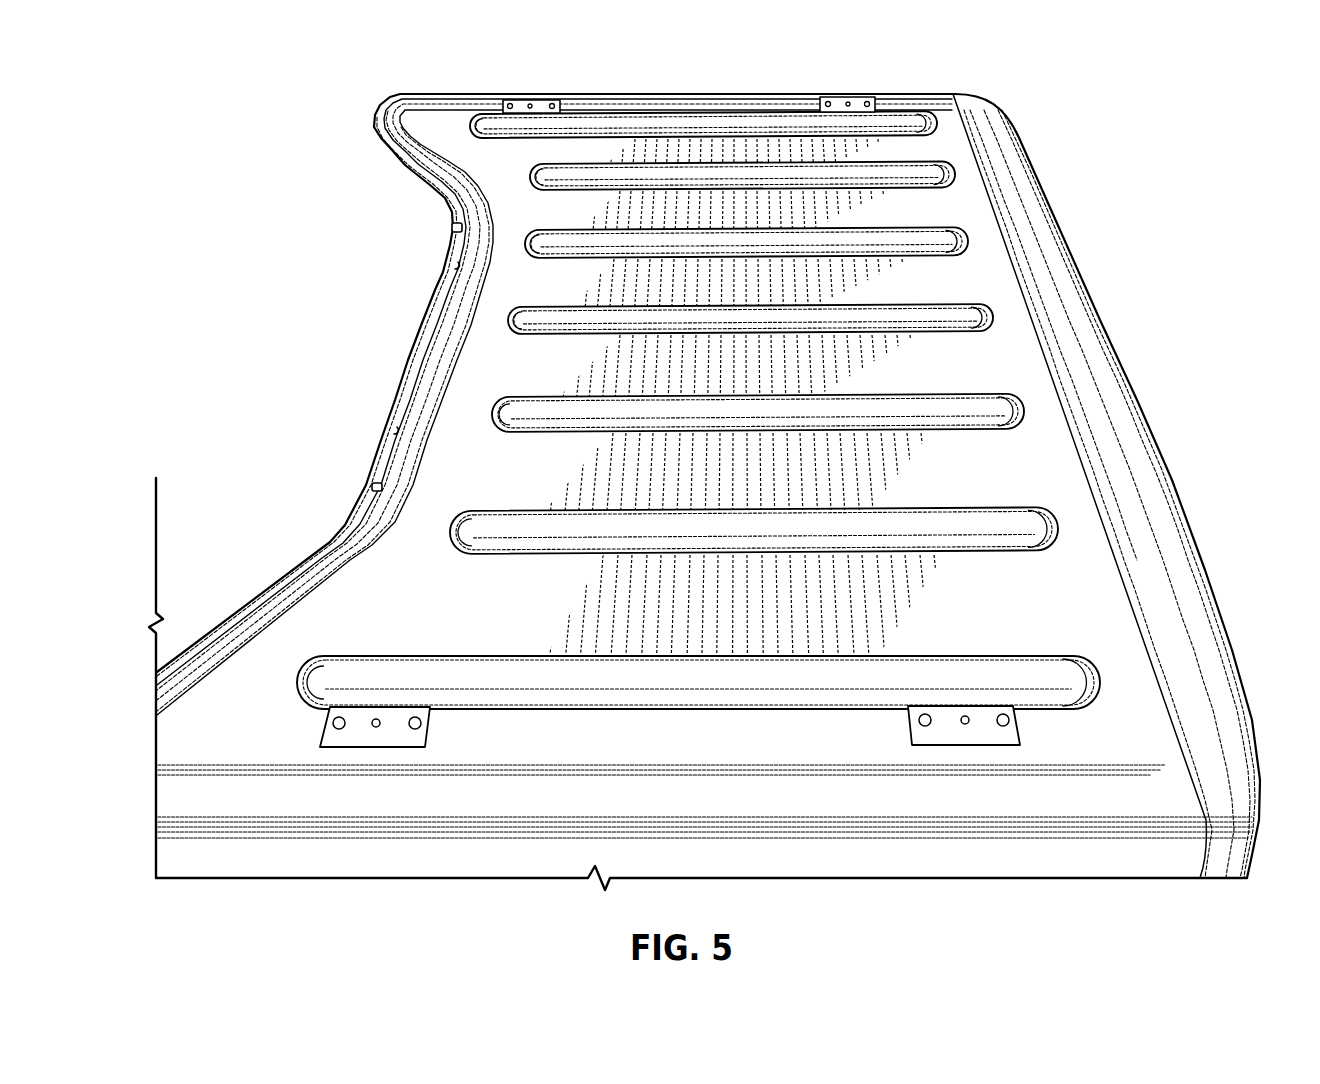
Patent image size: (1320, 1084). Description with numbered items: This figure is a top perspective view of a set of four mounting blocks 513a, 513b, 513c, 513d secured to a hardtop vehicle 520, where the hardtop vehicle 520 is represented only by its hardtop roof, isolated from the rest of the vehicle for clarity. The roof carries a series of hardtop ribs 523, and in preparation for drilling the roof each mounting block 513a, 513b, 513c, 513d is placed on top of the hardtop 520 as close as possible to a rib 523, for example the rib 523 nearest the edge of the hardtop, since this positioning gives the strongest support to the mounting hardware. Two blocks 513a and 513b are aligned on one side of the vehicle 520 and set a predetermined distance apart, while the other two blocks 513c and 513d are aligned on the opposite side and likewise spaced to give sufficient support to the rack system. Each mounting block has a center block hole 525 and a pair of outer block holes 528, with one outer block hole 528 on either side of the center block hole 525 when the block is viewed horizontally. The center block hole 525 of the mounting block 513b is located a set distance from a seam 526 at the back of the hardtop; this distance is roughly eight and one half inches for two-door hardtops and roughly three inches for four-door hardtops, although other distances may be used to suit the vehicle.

The mounting block 513a is at (308, 725).
The mounting block 513b is at (1052, 734).
The mounting block 513c is at (540, 100).
The mounting block 513d is at (855, 96).
The hardtop vehicle 520 is at (438, 285).
The hardtop rib 523 is at (985, 545).
The center block hole 525 is at (374, 719).
The seam 526 is at (1172, 630).
The outer block hole 528 is at (411, 729).